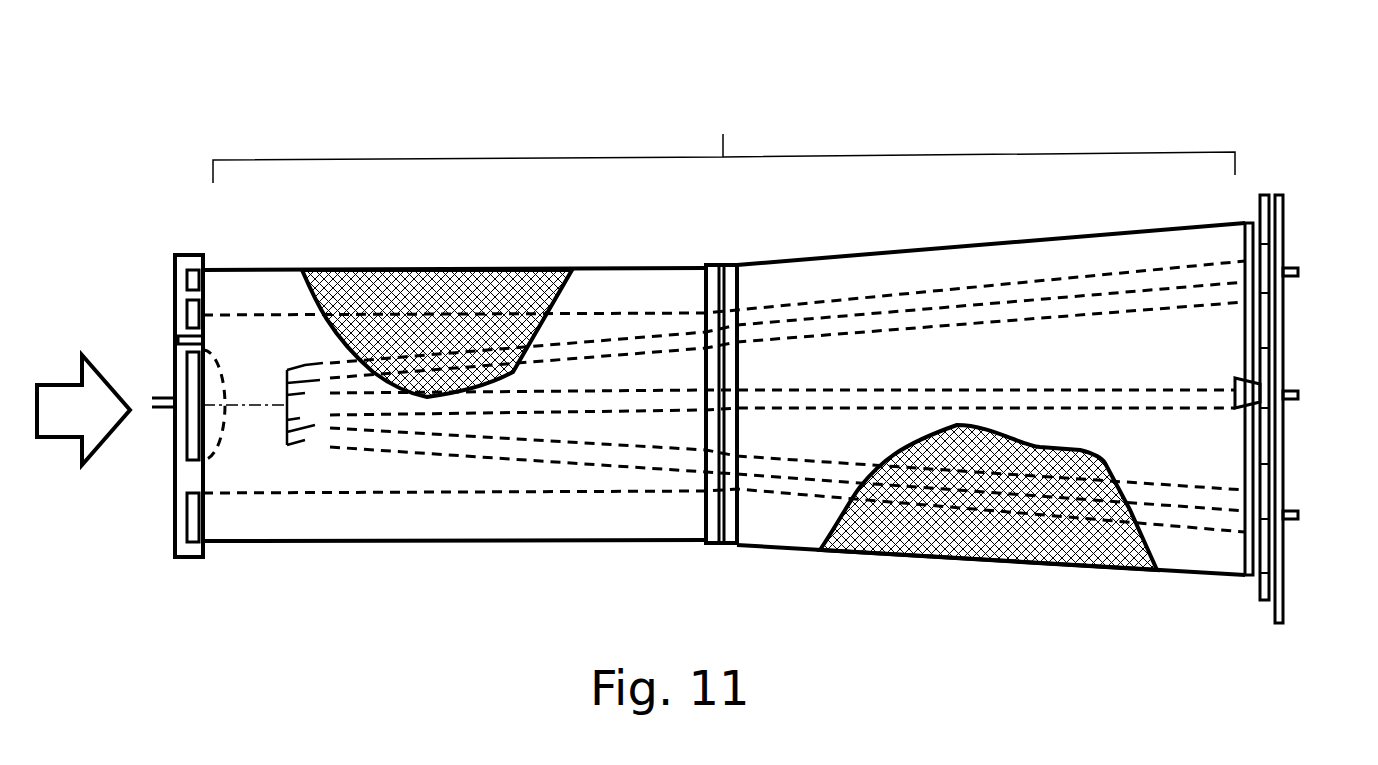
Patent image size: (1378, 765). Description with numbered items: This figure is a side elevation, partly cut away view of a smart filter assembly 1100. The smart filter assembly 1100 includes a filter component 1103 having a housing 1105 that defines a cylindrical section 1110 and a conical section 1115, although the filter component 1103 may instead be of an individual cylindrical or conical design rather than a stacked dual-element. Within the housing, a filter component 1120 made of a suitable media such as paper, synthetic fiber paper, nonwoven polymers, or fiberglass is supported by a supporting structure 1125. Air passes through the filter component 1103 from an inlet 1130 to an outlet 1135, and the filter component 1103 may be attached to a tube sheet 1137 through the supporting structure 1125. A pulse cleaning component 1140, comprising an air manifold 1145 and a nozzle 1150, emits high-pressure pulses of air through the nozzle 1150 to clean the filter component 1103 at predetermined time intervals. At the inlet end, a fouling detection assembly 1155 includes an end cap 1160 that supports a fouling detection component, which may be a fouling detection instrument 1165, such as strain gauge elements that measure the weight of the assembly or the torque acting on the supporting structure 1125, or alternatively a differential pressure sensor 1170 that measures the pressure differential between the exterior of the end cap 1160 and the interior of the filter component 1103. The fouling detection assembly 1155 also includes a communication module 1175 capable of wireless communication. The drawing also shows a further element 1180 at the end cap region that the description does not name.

The smart filter assembly 1100 is at (547, 92).
The filter component 1103 is at (724, 142).
The housing 1105 is at (1057, 237).
The cylindrical section 1110 is at (500, 542).
The conical section 1115 is at (755, 545).
The filter component 1120 is at (990, 560).
The supporting structure 1125 is at (798, 460).
The inlet 1130 is at (158, 262).
The outlet 1135 is at (1292, 231).
The tube sheet 1137 is at (1283, 600).
The pulse cleaning component 1140 is at (1257, 373).
The air manifold 1145 is at (1263, 601).
The nozzle 1150 is at (1235, 392).
The fouling detection assembly 1155 is at (170, 504).
The end cap 1160 is at (188, 258).
The fouling detection instrument 1165 is at (197, 341).
The differential pressure sensor 1170 is at (187, 313).
The communication module 1175 is at (205, 280).
The base plate 1180 is at (198, 558).